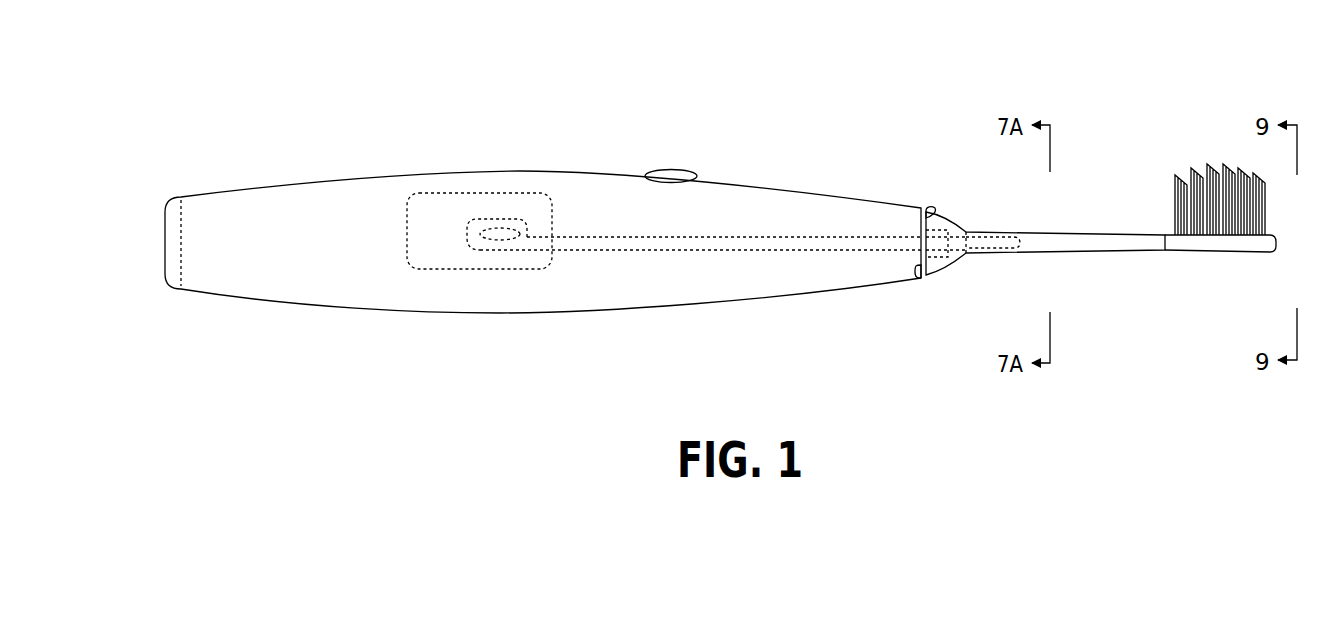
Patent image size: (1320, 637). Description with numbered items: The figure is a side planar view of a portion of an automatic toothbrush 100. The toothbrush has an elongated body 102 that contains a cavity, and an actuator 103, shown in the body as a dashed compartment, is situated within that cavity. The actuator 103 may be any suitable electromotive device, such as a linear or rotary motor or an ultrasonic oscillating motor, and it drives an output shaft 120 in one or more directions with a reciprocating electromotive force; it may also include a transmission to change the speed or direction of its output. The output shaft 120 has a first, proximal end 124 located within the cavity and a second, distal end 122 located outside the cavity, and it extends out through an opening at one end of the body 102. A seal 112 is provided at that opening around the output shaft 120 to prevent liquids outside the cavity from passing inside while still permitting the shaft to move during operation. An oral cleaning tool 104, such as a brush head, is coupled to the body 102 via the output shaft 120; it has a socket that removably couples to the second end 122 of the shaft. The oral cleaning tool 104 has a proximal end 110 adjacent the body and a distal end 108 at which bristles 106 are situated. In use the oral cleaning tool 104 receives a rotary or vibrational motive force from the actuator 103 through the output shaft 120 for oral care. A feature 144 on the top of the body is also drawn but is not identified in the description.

The automatic toothbrush 100 is at (205, 118).
The body 102 is at (300, 182).
The actuator 103 is at (465, 193).
The oral cleaning tool 104 is at (1108, 275).
The bristles 106 is at (1182, 168).
The distal end 108 is at (1276, 253).
The proximal end 110 is at (917, 278).
The seal 112 is at (929, 210).
The output shaft 120 is at (790, 237).
The second end 122 is at (1020, 245).
The first end 124 is at (472, 237).
The button 144 is at (670, 170).